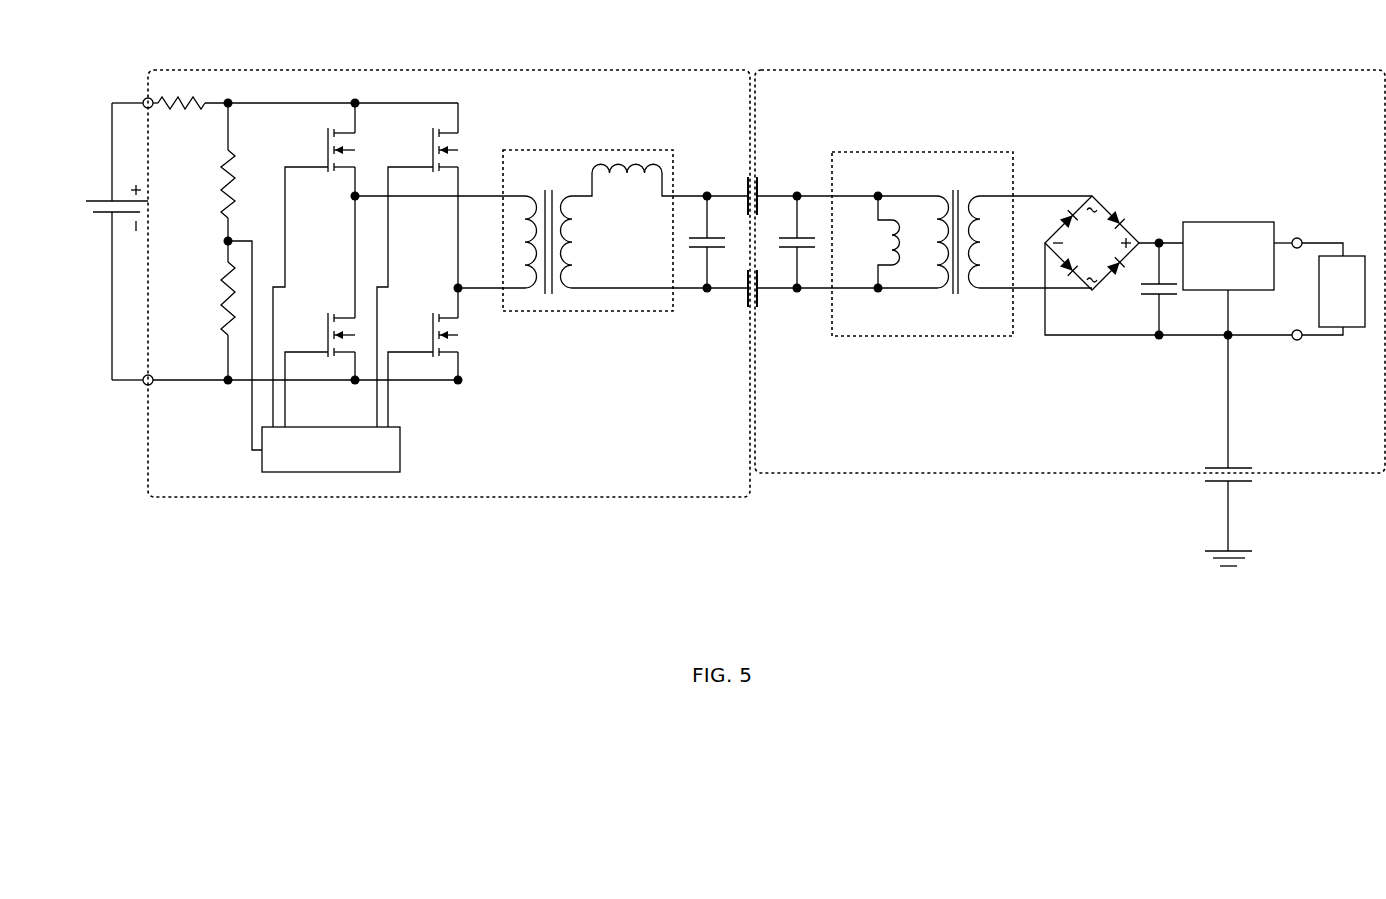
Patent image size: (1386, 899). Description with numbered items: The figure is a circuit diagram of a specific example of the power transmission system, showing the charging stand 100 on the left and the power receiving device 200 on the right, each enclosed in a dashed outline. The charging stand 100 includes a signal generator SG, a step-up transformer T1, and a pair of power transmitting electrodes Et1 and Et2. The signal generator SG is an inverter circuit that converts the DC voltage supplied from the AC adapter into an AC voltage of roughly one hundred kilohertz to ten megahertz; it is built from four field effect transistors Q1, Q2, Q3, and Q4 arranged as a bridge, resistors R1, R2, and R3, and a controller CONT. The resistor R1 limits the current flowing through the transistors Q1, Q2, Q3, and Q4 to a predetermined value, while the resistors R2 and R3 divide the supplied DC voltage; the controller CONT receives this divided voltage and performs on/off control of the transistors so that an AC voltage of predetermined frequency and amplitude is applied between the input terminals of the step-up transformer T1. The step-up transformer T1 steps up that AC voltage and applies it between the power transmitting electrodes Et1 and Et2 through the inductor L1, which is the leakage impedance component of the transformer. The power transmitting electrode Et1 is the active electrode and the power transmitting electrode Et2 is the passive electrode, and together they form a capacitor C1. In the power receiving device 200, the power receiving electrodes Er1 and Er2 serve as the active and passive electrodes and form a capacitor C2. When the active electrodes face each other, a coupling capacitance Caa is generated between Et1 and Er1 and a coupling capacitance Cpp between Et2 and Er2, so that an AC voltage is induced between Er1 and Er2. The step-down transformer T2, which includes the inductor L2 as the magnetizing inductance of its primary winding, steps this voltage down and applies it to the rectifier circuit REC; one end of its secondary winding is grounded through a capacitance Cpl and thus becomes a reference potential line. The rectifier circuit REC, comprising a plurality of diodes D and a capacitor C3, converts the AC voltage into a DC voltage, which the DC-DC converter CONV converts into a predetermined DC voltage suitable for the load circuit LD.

The charging stand 100 is at (573, 504).
The power receiving device 200 is at (875, 483).
The signal generator SG is at (330, 82).
The resistor R1 is at (181, 116).
The resistor R2 is at (214, 174).
The resistor R3 is at (214, 310).
The field effect transistor Q1 is at (314, 265).
The field effect transistor Q2 is at (320, 311).
The field effect transistor Q3 is at (417, 265).
The field effect transistor Q4 is at (423, 357).
The controller CONT is at (344, 356).
The step-up transformer T1 is at (605, 221).
The inductor L1 is at (639, 180).
The capacitor C1 is at (711, 242).
The coupling capacitance Caa is at (752, 189).
The coupling capacitance Cpp is at (752, 300).
The power transmitting electrode Et1 is at (727, 199).
The power transmitting electrode Et2 is at (727, 288).
The power receiving electrode Er1 is at (777, 199).
The power receiving electrode Er2 is at (777, 288).
The capacitor C2 is at (803, 242).
The step-down transformer T2 is at (962, 234).
The inductor L2 is at (877, 242).
The diode D is at (1092, 243).
The rectifier circuit REC is at (1120, 227).
The capacitor C3 is at (1164, 289).
The DC-DC converter CONV is at (1228, 267).
The load circuit LD is at (1320, 288).
The capacitance Cpl is at (1245, 450).